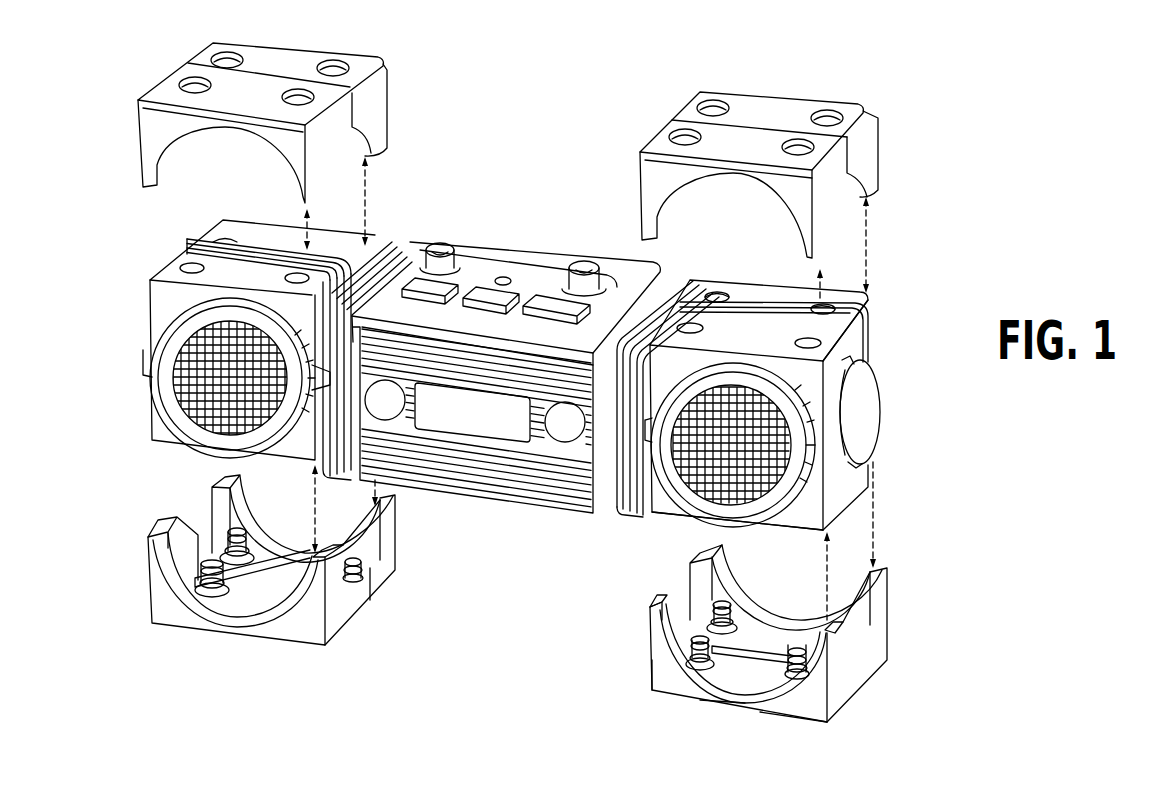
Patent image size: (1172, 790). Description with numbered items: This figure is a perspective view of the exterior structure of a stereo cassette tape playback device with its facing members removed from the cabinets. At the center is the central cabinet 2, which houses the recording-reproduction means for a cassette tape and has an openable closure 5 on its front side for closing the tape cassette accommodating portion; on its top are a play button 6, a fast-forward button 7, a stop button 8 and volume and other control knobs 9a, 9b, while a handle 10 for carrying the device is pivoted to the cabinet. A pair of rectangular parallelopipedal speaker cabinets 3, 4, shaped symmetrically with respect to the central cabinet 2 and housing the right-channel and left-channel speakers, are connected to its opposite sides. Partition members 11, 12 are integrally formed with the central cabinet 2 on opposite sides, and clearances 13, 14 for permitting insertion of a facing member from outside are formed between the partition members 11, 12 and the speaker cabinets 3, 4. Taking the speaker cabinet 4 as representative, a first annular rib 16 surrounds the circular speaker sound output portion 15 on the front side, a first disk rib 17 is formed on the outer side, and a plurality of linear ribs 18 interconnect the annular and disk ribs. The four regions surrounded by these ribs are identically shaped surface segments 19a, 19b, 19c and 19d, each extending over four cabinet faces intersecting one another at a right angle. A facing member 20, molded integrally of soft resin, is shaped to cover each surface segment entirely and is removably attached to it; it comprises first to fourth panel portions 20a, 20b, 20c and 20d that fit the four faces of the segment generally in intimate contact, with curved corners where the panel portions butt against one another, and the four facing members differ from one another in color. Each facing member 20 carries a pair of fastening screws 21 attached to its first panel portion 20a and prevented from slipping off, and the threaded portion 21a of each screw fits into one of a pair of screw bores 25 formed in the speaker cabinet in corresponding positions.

The central cabinet 2 is at (506, 385).
The speaker cabinet 3 is at (262, 233).
The speaker cabinet 4 is at (802, 386).
The openable closure 5 is at (557, 470).
The play button 6 is at (552, 302).
The fast-forward button 7 is at (483, 298).
The stop button 8 is at (427, 291).
The control knob 9a is at (441, 245).
The control knob 9b is at (583, 262).
The handle 10 is at (518, 254).
The partition member 11 is at (396, 245).
The partition member 12 is at (672, 282).
The clearance 13 is at (383, 243).
The clearance 14 is at (697, 280).
The speaker sound output portion 15 is at (700, 504).
The first annular rib 16 is at (767, 508).
The first disk rib 17 is at (871, 414).
The linear rib 18 is at (758, 286).
The surface segment 19a is at (855, 352).
The surface segment 19b is at (855, 308).
The surface segment 19c is at (807, 514).
The surface segment 19d is at (874, 460).
The facing member 20 is at (878, 140).
The first panel portion 20a is at (723, 683).
The second panel portion 20b is at (667, 680).
The third panel portion 20c is at (658, 638).
The fourth panel portion 20d is at (787, 727).
The fastening screw 21 is at (710, 106).
The threaded portion 21a is at (727, 612).
The screw bore 25 is at (781, 339).